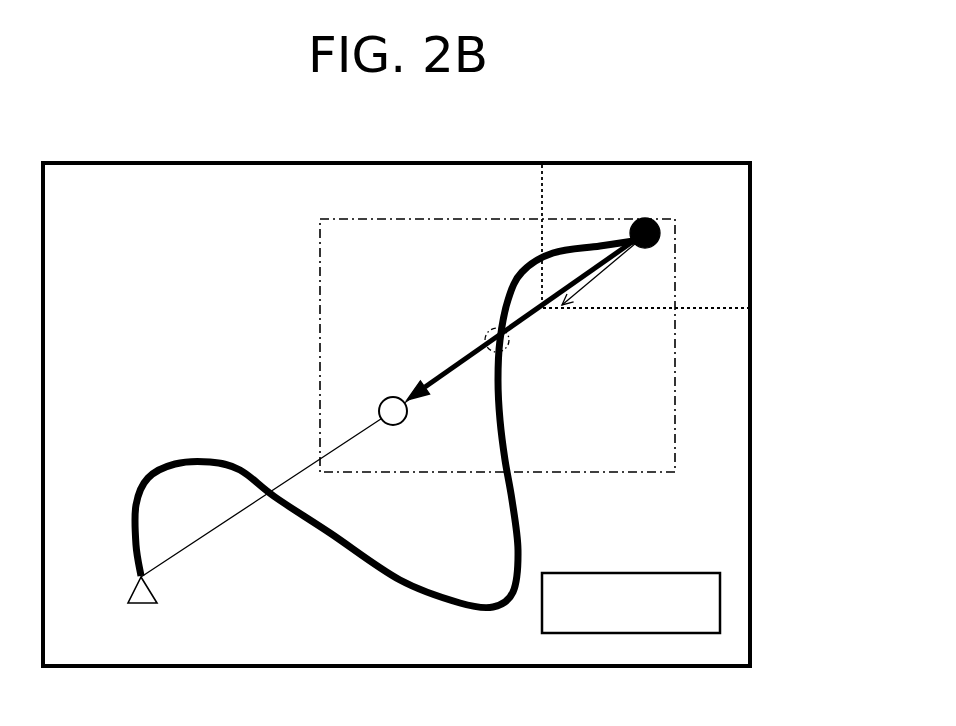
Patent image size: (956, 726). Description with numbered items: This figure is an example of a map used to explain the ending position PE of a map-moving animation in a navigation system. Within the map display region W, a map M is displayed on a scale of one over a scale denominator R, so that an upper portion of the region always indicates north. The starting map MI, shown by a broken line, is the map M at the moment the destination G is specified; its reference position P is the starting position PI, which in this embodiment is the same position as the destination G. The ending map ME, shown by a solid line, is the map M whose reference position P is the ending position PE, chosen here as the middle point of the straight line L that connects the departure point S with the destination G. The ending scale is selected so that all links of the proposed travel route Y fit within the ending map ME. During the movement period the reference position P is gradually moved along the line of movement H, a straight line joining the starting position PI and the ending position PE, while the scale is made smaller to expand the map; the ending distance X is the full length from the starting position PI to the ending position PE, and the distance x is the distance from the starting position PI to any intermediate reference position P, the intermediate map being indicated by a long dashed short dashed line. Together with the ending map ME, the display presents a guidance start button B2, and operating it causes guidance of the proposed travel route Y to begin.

The ending map ME is at (450, 414).
The map M is at (497, 323).
The starting map MI is at (595, 218).
The map display region W is at (798, 458).
The guidance start button B2 is at (682, 573).
The straight line L is at (393, 405).
The proposed travel route Y is at (387, 424).
The departure point S is at (192, 612).
The scale denominator R is at (115, 617).
The line of movement H is at (451, 316).
The ending distance X is at (451, 316).
The distance x is at (599, 274).
The destination G is at (729, 219).
The starting position PI is at (729, 219).
The ending position PE is at (303, 388).
The reference position P is at (542, 348).